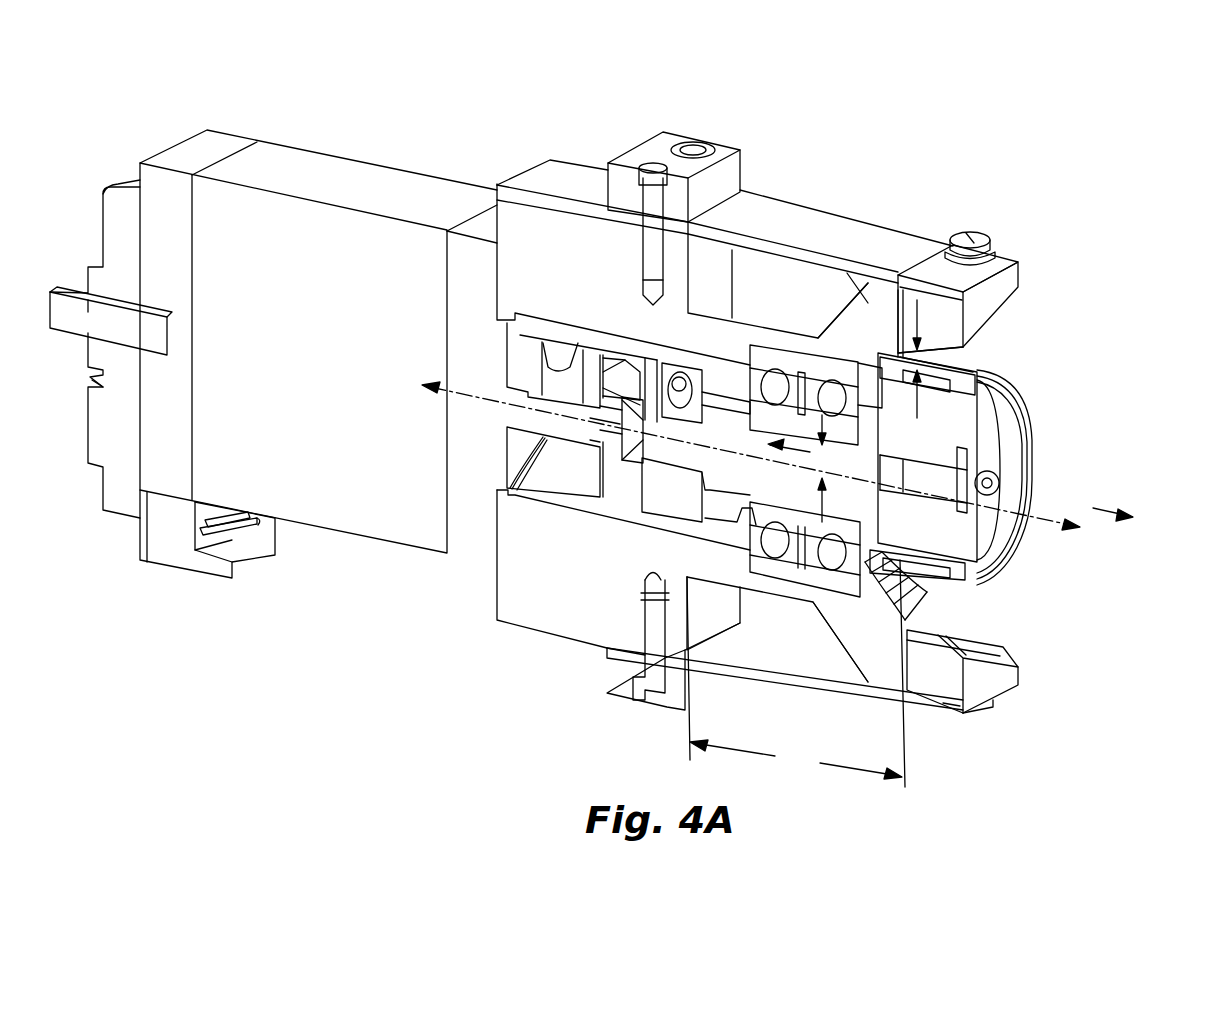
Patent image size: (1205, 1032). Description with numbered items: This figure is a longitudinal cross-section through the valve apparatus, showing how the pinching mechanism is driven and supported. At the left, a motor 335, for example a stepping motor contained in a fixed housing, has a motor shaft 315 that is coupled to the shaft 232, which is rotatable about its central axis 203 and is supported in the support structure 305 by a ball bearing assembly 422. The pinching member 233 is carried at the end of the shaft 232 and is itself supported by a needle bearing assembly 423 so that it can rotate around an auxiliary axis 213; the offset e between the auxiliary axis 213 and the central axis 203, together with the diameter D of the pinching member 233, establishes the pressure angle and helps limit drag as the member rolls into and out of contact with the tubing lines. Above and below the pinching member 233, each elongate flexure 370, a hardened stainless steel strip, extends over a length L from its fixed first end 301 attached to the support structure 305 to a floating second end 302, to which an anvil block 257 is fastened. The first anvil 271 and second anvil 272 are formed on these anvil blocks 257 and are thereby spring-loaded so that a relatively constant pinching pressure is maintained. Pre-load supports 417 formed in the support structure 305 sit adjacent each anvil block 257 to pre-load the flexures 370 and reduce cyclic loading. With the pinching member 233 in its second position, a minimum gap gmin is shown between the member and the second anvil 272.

The central axis 203 is at (477, 397).
The auxiliary axis 213 is at (1108, 509).
The shaft 232 is at (939, 457).
The pinching member 233 is at (1033, 462).
The anvil block 257 is at (990, 303).
The first spring-loaded anvil 271 is at (943, 651).
The second spring-loaded anvil 272 is at (950, 357).
The first end of flexure 301 is at (621, 158).
The floating second end of flexure 302 is at (990, 260).
The support structure 305 is at (631, 462).
The motor shaft 315 is at (543, 435).
The motor 335 is at (273, 354).
The elongate flexure 370 is at (858, 240).
The pre-load support 417 is at (868, 300).
The ball bearing assembly 422 is at (800, 365).
The needle bearing assembly 423 is at (925, 568).
The diameter of pinching member D is at (1027, 410).
The length of flexure L is at (796, 673).
The offset e is at (822, 522).
The minimum gap gmin is at (925, 310).